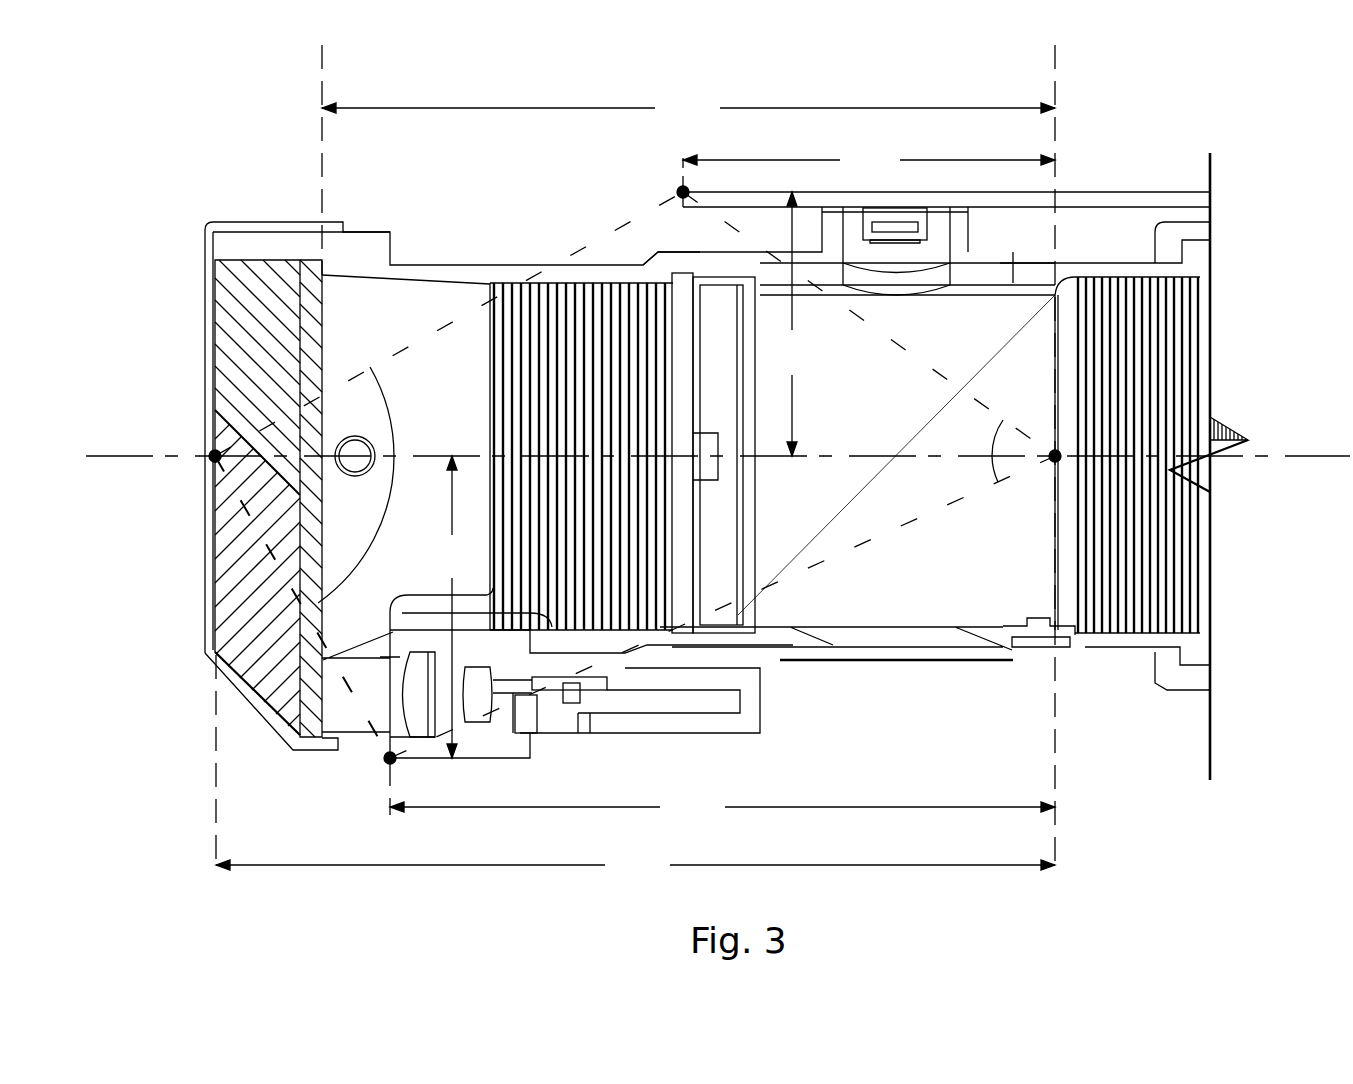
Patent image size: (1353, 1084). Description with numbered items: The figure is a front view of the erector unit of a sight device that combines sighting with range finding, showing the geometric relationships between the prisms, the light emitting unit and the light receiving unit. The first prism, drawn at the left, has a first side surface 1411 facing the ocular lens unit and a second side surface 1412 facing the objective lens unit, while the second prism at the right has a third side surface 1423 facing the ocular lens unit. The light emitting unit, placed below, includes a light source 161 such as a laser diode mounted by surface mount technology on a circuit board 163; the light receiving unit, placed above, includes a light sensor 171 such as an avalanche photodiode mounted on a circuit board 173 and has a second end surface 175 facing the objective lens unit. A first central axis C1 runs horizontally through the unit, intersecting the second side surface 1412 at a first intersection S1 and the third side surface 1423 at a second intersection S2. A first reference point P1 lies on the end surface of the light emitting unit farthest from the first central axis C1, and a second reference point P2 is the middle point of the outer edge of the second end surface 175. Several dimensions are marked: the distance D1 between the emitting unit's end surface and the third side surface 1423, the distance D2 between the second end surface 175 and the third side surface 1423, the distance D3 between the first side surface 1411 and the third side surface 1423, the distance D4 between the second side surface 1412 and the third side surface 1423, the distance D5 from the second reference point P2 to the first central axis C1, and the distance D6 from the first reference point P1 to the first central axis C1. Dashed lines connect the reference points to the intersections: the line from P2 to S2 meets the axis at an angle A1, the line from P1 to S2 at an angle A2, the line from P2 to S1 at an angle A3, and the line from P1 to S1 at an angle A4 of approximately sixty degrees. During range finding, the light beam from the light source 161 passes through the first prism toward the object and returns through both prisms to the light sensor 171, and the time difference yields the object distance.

The first side surface 1411 is at (300, 262).
The second side surface 1412 is at (218, 568).
The third side surface 1423 is at (1058, 568).
The light source 161 is at (572, 705).
The circuit board 163 is at (697, 722).
The light sensor 171 is at (905, 216).
The circuit board 173 is at (1123, 196).
The second end surface 175 is at (683, 206).
The first central axis C1 is at (150, 440).
The first intersection S1 is at (214, 458).
The second intersection S2 is at (1067, 456).
The first reference point P1 is at (390, 762).
The second reference point P2 is at (680, 193).
The angle A1 is at (971, 435).
The angle A2 is at (964, 472).
The angle A3 is at (401, 411).
The angle A4 is at (365, 529).
The distance D1 is at (722, 809).
The distance D2 is at (869, 162).
The distance D3 is at (688, 110).
The distance D4 is at (635, 867).
The distance D5 is at (787, 324).
The distance D6 is at (447, 607).